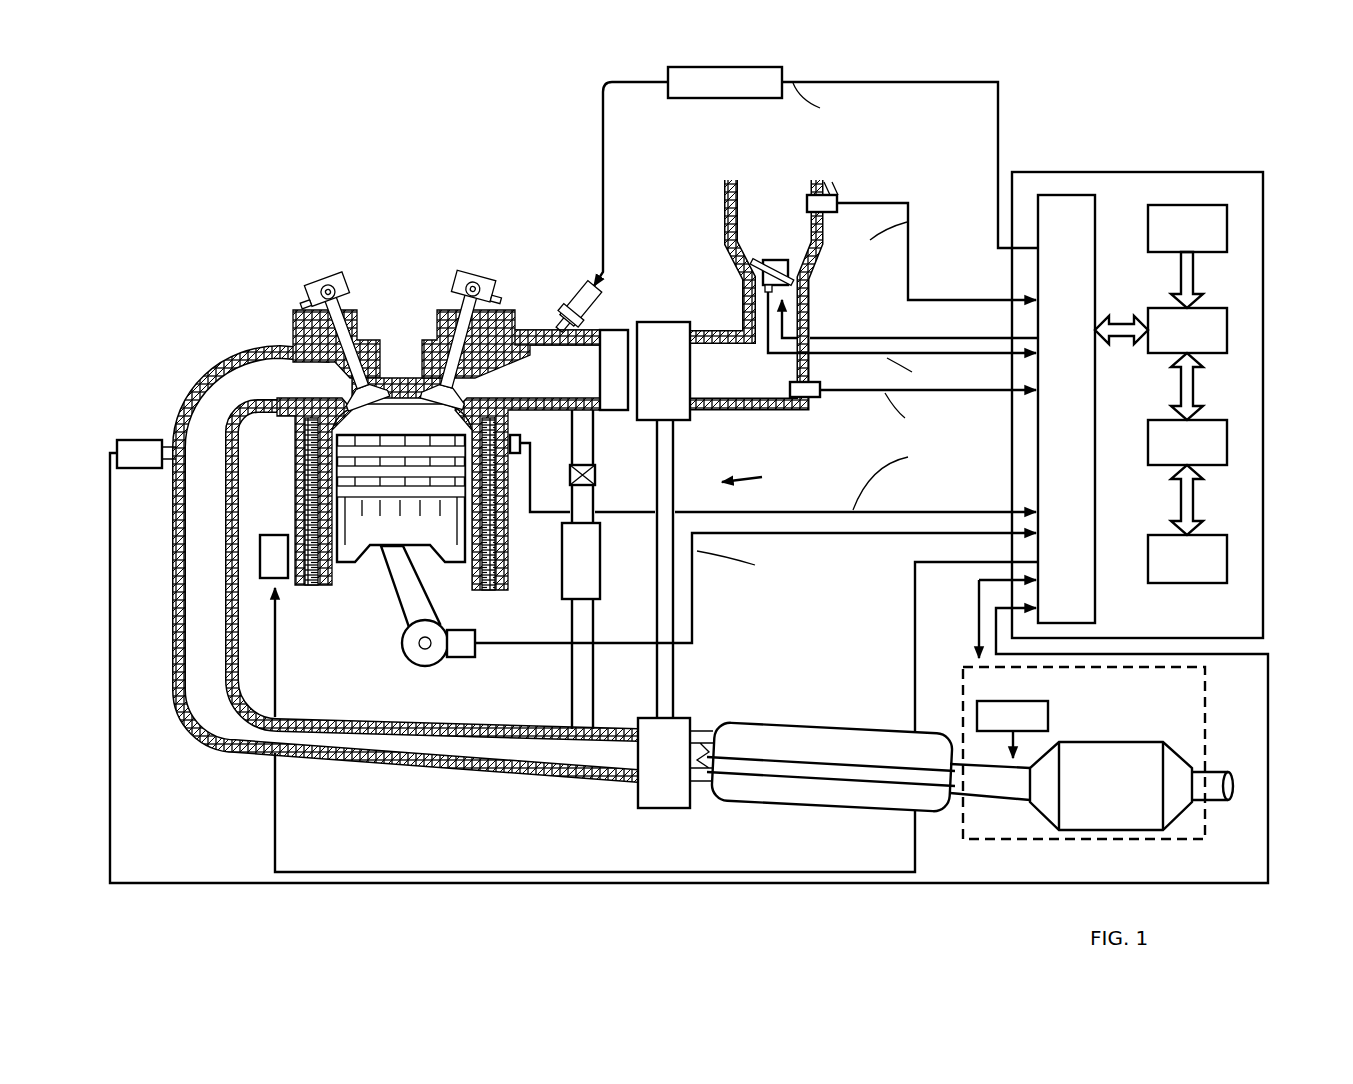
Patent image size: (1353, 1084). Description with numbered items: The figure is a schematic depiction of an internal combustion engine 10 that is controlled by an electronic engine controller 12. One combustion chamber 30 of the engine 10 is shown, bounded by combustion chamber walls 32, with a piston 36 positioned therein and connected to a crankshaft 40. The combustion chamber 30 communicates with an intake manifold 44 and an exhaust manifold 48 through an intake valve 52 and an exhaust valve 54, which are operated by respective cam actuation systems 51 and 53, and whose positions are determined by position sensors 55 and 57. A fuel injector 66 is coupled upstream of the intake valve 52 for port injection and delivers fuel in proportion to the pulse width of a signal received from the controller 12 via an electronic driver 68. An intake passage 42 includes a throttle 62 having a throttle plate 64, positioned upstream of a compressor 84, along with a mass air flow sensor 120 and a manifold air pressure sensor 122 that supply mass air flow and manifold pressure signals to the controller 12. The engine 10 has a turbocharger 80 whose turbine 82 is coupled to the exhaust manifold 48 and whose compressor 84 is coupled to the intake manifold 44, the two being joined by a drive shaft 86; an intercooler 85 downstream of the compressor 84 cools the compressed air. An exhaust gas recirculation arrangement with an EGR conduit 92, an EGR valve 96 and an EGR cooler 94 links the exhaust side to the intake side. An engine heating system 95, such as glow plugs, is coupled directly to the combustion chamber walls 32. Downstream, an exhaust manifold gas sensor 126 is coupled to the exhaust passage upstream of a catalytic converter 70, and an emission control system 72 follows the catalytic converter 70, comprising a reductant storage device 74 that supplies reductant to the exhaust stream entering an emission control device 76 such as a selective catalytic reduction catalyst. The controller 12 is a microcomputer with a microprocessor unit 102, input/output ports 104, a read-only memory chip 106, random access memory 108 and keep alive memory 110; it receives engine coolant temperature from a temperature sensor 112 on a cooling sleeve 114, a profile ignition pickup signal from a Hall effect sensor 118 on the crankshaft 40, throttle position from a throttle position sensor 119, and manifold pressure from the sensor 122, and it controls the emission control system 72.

The internal combustion engine 10 is at (696, 475).
The electronic engine controller 12 is at (1182, 389).
The combustion chamber 30 is at (395, 425).
The combustion chamber walls 32 is at (438, 517).
The piston 36 is at (383, 532).
The crankshaft 40 is at (410, 668).
The intake passage 42 is at (786, 230).
The intake manifold 44 is at (577, 384).
The exhaust manifold 48 is at (268, 390).
The cam actuation system 51 is at (465, 278).
The intake valve 52 is at (476, 313).
The cam actuation system 53 is at (338, 278).
The exhaust valve 54 is at (339, 312).
The position sensor 55 is at (490, 302).
The position sensor 57 is at (318, 302).
The throttle 62 is at (767, 279).
The throttle plate 64 is at (760, 268).
The fuel injector 66 is at (602, 303).
The electronic driver 68 is at (745, 98).
The catalytic converter 70 is at (775, 730).
The emission control system 72 is at (1098, 770).
The reductant storage device 74 is at (1018, 701).
The emission control device 76 is at (1115, 742).
The turbocharger 80 is at (756, 478).
The turbine 82 is at (680, 718).
The compressor 84 is at (660, 320).
The intercooler 85 is at (605, 330).
The drive shaft 86 is at (673, 700).
The EGR conduit 92 is at (586, 569).
The EGR cooler 94 is at (600, 580).
The engine heating system 95 is at (262, 572).
The EGR valve 96 is at (598, 483).
The microprocessor unit 102 is at (1228, 325).
The input/output ports 104 is at (1100, 205).
The read-only memory chip 106 is at (1228, 225).
The random access memory 108 is at (1228, 440).
The keep alive memory 110 is at (1228, 555).
The temperature sensor 112 is at (530, 448).
The cooling sleeve 114 is at (500, 540).
The Hall effect sensor 118 is at (468, 660).
The throttle position sensor 119 is at (768, 290).
The mass air flow sensor 120 is at (827, 190).
The manifold air pressure sensor 122 is at (818, 397).
The exhaust manifold gas sensor 126 is at (117, 447).